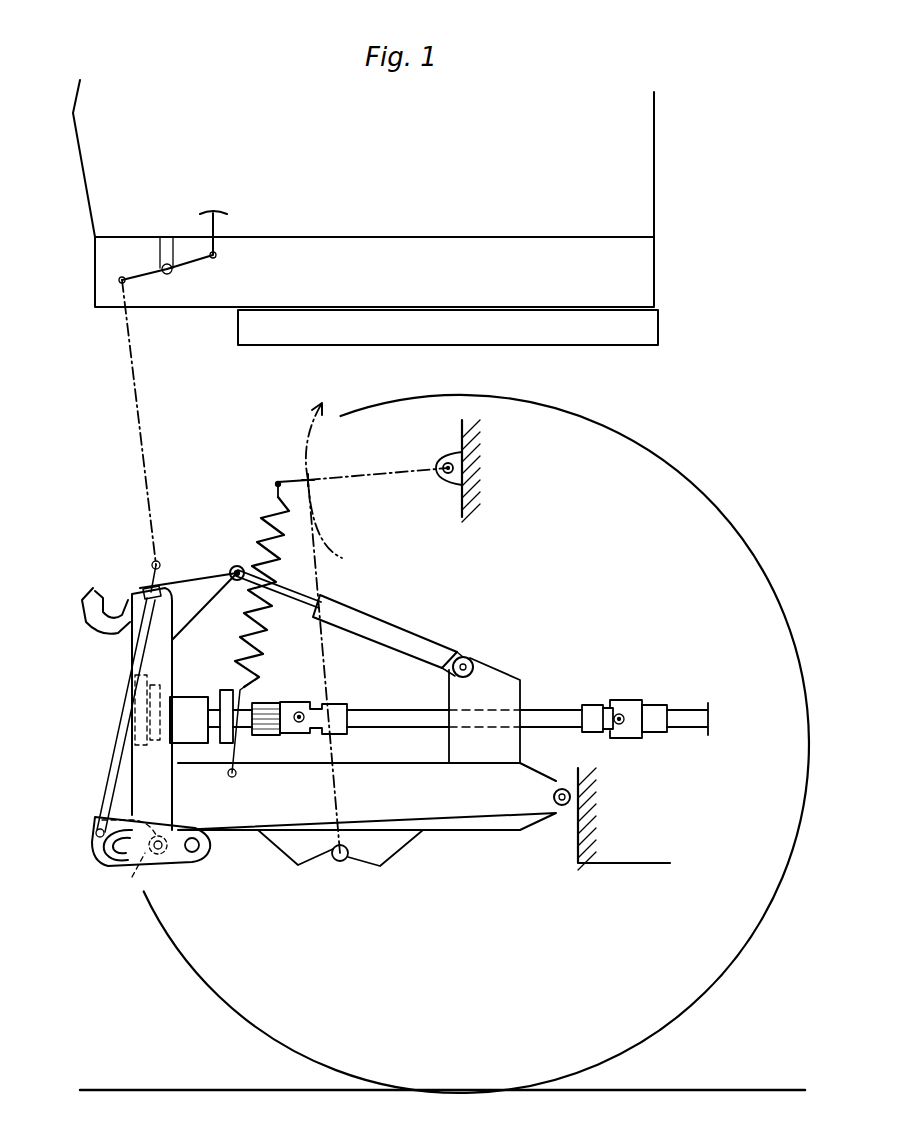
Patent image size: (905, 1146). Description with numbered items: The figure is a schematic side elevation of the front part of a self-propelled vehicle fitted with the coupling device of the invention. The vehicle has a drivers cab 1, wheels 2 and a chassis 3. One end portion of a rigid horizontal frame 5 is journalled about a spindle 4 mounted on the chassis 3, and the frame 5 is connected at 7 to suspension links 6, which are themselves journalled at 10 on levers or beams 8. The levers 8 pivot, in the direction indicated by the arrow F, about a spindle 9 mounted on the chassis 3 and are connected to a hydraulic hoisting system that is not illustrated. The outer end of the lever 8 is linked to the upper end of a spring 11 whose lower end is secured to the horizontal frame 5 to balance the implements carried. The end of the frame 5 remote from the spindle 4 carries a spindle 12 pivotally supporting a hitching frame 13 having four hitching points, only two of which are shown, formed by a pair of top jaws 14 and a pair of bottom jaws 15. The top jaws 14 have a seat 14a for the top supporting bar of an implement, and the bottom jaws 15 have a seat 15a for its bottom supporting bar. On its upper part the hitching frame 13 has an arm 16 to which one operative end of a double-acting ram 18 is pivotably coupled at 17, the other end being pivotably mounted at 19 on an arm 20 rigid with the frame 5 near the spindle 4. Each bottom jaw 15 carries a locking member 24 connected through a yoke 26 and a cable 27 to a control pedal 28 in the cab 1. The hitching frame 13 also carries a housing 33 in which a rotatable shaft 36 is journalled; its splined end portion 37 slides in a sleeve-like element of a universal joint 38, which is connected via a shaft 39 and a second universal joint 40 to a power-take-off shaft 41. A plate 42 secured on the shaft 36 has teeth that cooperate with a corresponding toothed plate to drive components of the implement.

The drivers cab 1 is at (666, 273).
The wheels 2 is at (707, 498).
The chassis 3 is at (460, 495).
The spindle 4 is at (553, 797).
The rigid horizontal frame 5 is at (367, 814).
The suspension links 6 is at (317, 563).
The connection point 7 is at (342, 862).
The levers or beams 8 is at (368, 478).
The spindle 9 is at (445, 465).
The journal point 10 is at (308, 480).
The spring 11 is at (267, 507).
The spindle 12 is at (203, 852).
The hitching frame 13 is at (148, 657).
The top jaws 14 is at (103, 638).
The seat 14a is at (118, 595).
The bottom jaws 15 is at (138, 870).
The seat 15a is at (120, 860).
The arm 16 is at (193, 592).
The pivot coupling 17 is at (233, 563).
The double-acting ram 18 is at (405, 637).
The pivot mounting 19 is at (470, 660).
The arm 20 is at (510, 685).
The locking member 24 is at (93, 837).
The yoke 26 is at (120, 722).
The cable 27 is at (128, 352).
The control pedal 28 is at (215, 213).
The housing 33 is at (188, 745).
The rotatable shaft 36 is at (246, 720).
The splined end portion 37 is at (275, 705).
The universal joint 38 is at (308, 722).
The shaft 39 is at (367, 713).
The second universal joint 40 is at (612, 718).
The power-take-off shaft 41 is at (690, 715).
The plate 42 is at (140, 762).
The arrow F is at (323, 615).